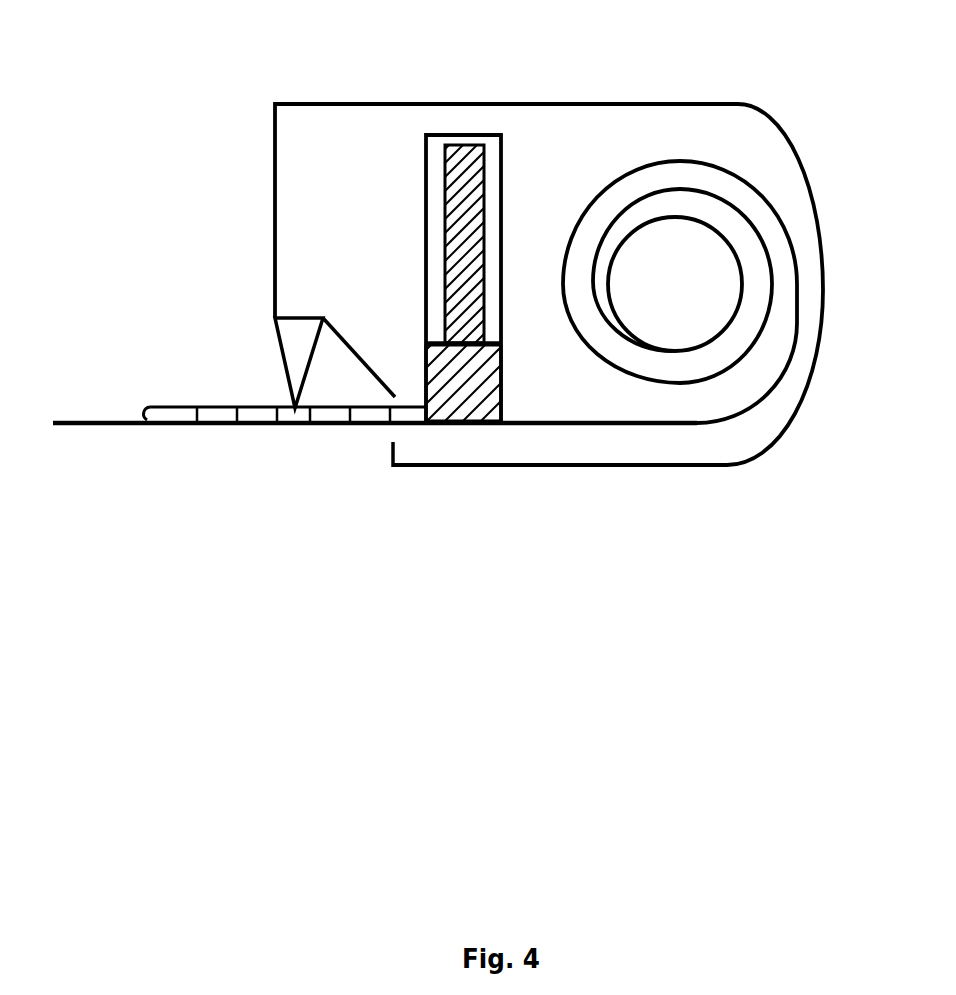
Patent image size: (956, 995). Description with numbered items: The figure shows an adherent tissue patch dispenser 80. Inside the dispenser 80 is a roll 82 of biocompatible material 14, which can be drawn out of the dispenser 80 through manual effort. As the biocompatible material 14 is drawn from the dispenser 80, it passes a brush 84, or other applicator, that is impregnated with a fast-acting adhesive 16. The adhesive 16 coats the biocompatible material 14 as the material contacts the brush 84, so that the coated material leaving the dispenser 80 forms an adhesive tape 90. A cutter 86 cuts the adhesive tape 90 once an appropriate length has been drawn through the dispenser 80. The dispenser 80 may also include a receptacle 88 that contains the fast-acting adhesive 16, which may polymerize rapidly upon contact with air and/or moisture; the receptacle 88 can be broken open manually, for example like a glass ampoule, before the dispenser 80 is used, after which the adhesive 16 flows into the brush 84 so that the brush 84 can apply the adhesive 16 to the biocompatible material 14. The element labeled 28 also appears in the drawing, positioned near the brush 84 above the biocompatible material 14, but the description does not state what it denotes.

The biocompatible material 14 is at (788, 387).
The fast-acting adhesive 16 is at (462, 170).
The wedge / bond tool 28 is at (290, 342).
The dispenser 80 is at (453, 318).
The roll 82 is at (677, 180).
The brush 84 is at (408, 445).
The cutter 86 is at (463, 397).
The receptacle 88 is at (462, 222).
The adhesive tape 90 is at (312, 438).